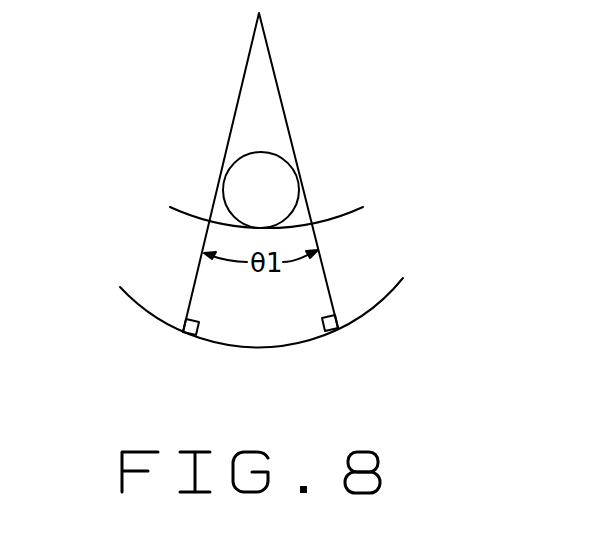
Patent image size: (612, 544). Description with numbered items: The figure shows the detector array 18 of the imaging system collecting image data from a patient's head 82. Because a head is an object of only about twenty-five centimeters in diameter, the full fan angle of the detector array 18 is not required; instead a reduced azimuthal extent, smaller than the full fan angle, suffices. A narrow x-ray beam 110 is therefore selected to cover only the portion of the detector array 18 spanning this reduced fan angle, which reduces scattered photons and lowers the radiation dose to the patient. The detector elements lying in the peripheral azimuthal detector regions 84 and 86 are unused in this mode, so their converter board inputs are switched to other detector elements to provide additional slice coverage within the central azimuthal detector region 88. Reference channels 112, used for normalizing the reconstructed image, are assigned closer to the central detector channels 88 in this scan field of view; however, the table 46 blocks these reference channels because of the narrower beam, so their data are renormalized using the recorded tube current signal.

The narrow x-ray beam 110 is at (287, 123).
The head 82 is at (300, 185).
The table 46 is at (340, 214).
The peripheral azimuthal detector region 86 is at (395, 287).
The peripheral azimuthal detector region 84 is at (143, 308).
The central azimuthal detector region 88 is at (236, 346).
The detector array 18 is at (380, 318).
The reference channels 112 is at (189, 336).